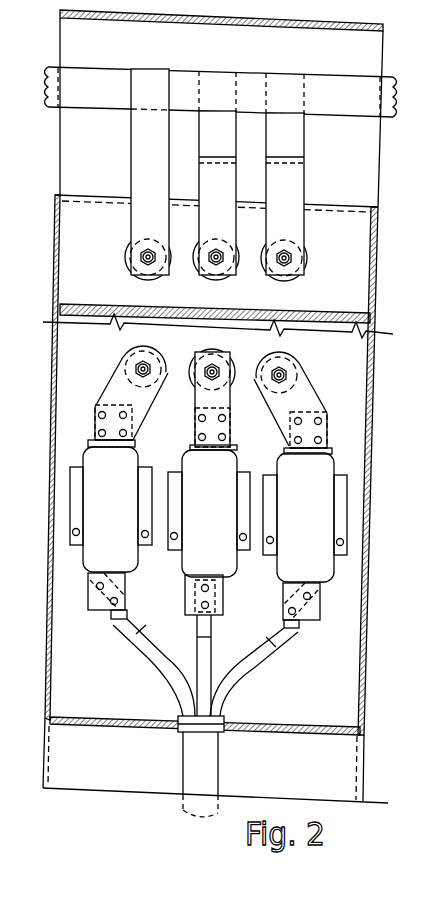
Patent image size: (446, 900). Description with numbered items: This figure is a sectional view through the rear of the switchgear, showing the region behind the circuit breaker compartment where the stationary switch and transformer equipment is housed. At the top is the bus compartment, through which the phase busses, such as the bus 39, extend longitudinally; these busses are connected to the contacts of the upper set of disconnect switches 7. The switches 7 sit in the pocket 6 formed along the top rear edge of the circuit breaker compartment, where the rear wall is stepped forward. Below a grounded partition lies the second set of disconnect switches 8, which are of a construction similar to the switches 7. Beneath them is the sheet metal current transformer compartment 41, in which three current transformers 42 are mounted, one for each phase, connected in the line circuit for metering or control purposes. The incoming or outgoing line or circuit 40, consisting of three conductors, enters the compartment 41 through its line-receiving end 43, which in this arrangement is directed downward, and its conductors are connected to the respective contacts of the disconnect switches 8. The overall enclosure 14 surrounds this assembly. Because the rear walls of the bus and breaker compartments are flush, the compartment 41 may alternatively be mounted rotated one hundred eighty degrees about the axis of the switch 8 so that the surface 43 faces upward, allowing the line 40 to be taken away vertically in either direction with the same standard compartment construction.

The switchgear enclosure 14 is at (253, 108).
The bus 39 is at (340, 108).
The pocket 6 is at (74, 252).
The disconnect switches 7 is at (207, 287).
The disconnect switches 8 is at (118, 357).
The current transformer compartment 41 is at (343, 646).
The current transformers 42 is at (186, 561).
The line-receiving end 43 is at (274, 723).
The incoming or outgoing line or circuit 40 is at (210, 778).